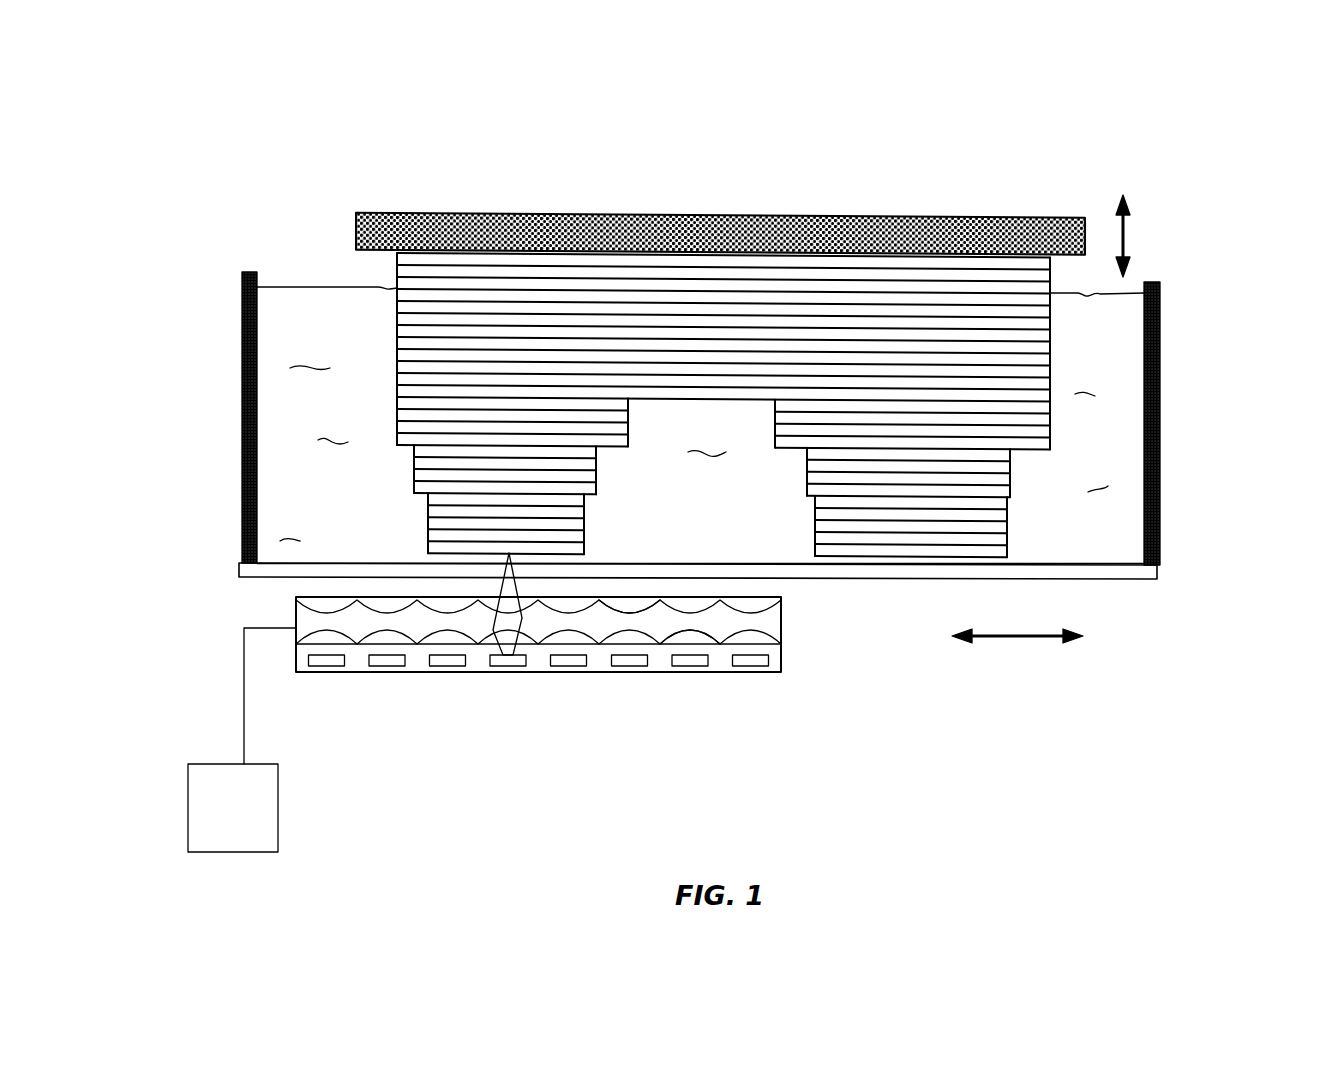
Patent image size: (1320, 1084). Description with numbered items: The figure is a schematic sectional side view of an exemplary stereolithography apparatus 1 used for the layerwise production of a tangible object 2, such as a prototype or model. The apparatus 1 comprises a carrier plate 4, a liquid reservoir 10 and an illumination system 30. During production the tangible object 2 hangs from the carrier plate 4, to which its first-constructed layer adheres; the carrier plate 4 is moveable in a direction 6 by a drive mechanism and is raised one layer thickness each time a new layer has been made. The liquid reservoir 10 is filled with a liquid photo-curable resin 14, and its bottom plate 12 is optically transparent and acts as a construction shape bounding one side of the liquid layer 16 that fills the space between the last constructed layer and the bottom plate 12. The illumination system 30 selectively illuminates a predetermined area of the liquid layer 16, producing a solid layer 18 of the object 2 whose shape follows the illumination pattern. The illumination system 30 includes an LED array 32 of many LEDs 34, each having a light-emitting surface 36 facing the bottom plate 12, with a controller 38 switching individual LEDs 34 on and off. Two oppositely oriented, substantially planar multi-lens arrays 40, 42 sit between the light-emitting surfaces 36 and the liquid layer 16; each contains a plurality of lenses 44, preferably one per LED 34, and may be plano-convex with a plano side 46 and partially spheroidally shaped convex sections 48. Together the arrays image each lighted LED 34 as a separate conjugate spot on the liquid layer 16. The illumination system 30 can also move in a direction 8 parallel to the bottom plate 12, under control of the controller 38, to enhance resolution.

The stereolithography apparatus 1 is at (940, 779).
The tangible object 2 is at (744, 361).
The carrier plate 4 is at (405, 225).
The direction 6 is at (1131, 236).
The direction 8 is at (1017, 649).
The liquid reservoir 10 is at (1155, 362).
The bottom plate 12 is at (762, 591).
The photo-curable resin 14 is at (290, 407).
The liquid layer 16 is at (975, 560).
The solid layer 18 is at (1000, 500).
The illumination system 30 is at (210, 620).
The LED array 32 is at (800, 665).
The LEDs 34 is at (453, 660).
The light-emitting surface 36 is at (520, 654).
The controller 38 is at (233, 808).
The multi-lens array 40 is at (800, 637).
The multi-lens array 42 is at (800, 603).
The lenses 44 is at (640, 609).
The plano side 46 is at (592, 645).
The convex sections 48 is at (322, 628).